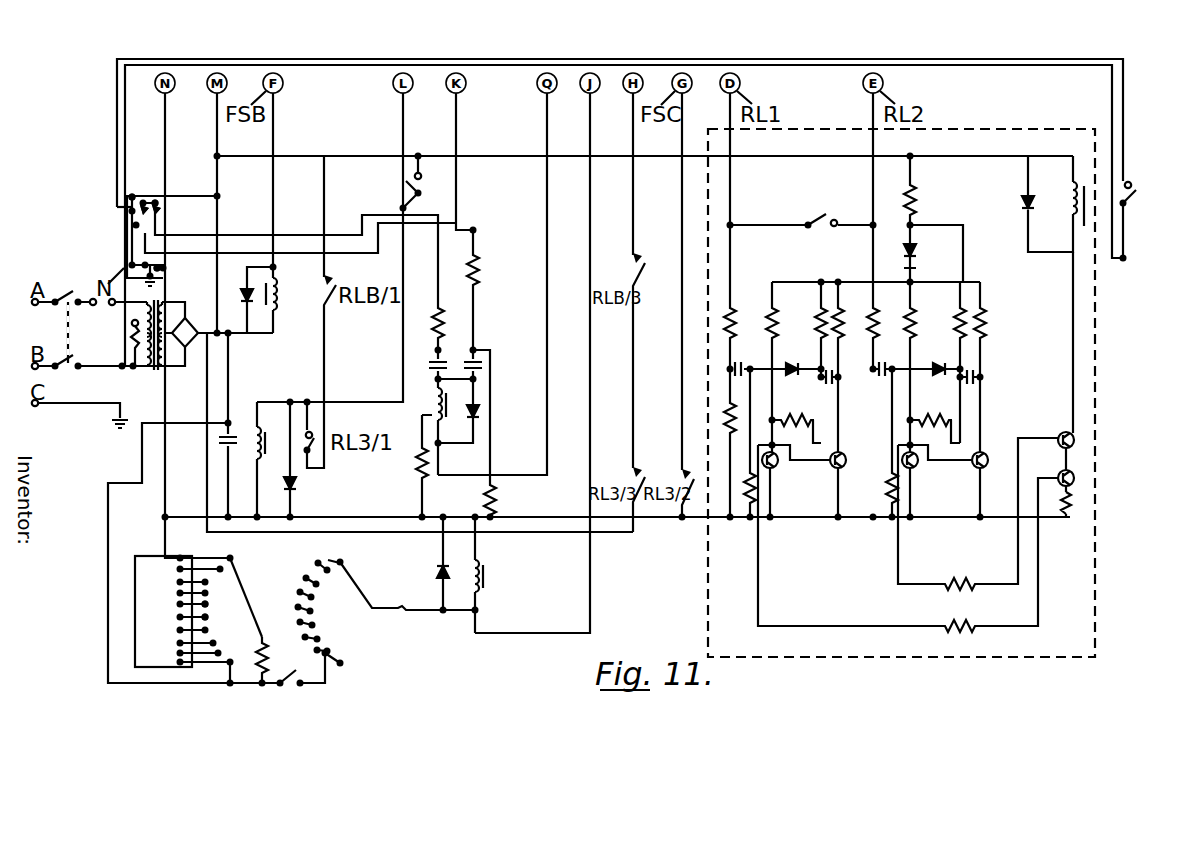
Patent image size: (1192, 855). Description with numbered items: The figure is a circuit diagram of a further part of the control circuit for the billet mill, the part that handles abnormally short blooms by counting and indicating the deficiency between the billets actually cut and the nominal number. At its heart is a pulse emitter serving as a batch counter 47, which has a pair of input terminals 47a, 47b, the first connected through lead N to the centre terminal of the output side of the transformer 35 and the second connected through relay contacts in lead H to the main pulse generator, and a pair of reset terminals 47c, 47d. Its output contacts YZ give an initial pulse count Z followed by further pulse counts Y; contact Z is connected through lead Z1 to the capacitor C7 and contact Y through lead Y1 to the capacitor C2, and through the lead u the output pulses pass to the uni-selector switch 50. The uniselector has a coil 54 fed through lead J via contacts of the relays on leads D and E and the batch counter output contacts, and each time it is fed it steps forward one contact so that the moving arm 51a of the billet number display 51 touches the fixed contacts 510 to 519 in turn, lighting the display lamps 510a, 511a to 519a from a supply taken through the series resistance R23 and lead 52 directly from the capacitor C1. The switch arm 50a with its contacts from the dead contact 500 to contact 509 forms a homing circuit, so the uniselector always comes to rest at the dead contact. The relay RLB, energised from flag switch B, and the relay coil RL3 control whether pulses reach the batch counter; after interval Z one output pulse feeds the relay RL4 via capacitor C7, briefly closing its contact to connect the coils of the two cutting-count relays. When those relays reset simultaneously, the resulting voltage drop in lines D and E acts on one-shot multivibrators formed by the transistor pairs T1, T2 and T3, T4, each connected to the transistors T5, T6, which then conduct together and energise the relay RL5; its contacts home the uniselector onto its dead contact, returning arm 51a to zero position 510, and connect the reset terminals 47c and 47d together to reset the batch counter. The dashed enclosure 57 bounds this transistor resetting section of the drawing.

The pulse emitter / batch counter 47 is at (136, 225).
The input terminal of batch counter 47a is at (160, 268).
The input terminal of batch counter 47b is at (157, 278).
The batch counter reset terminal 47c is at (157, 214).
The batch counter reset terminal 47d is at (132, 197).
The transformer 35 is at (155, 368).
The uni-selector switch 50 is at (356, 575).
The switch arm 50a is at (383, 598).
The dead contact 500 is at (329, 549).
The homing contact 509 is at (343, 657).
The billet number display 51 is at (249, 600).
The moving arm 51a is at (226, 616).
The lead 52 is at (178, 631).
The fixed contact / zero position 510 is at (232, 560).
The display lamp 510a is at (178, 558).
The display lamp 511a is at (178, 569).
The fixed contact 519 is at (225, 694).
The display lamp 519a is at (178, 661).
The uniselector coil 54 is at (485, 575).
The bistable circuit unit 57 is at (1093, 362).
The series resistance R23 is at (283, 662).
The capacitor C1 is at (218, 440).
The capacitor C2 is at (478, 366).
The capacitor C7 is at (432, 366).
The batch counter output terminal Z is at (482, 289).
The lead Z1 is at (296, 258).
The lead Y1 is at (300, 250).
The batch counter output contacts YZ is at (155, 203).
The lead u is at (424, 428).
The relay RLB is at (282, 299).
The relay coil RL3 is at (255, 448).
The relay RL4 is at (455, 404).
The relay RL5 is at (1077, 180).
The transistor T1 is at (776, 468).
The transistor T2 is at (833, 468).
The transistor T3 is at (915, 468).
The transistor T4 is at (974, 468).
The transistor T5 is at (1059, 434).
The transistor T6 is at (1059, 474).